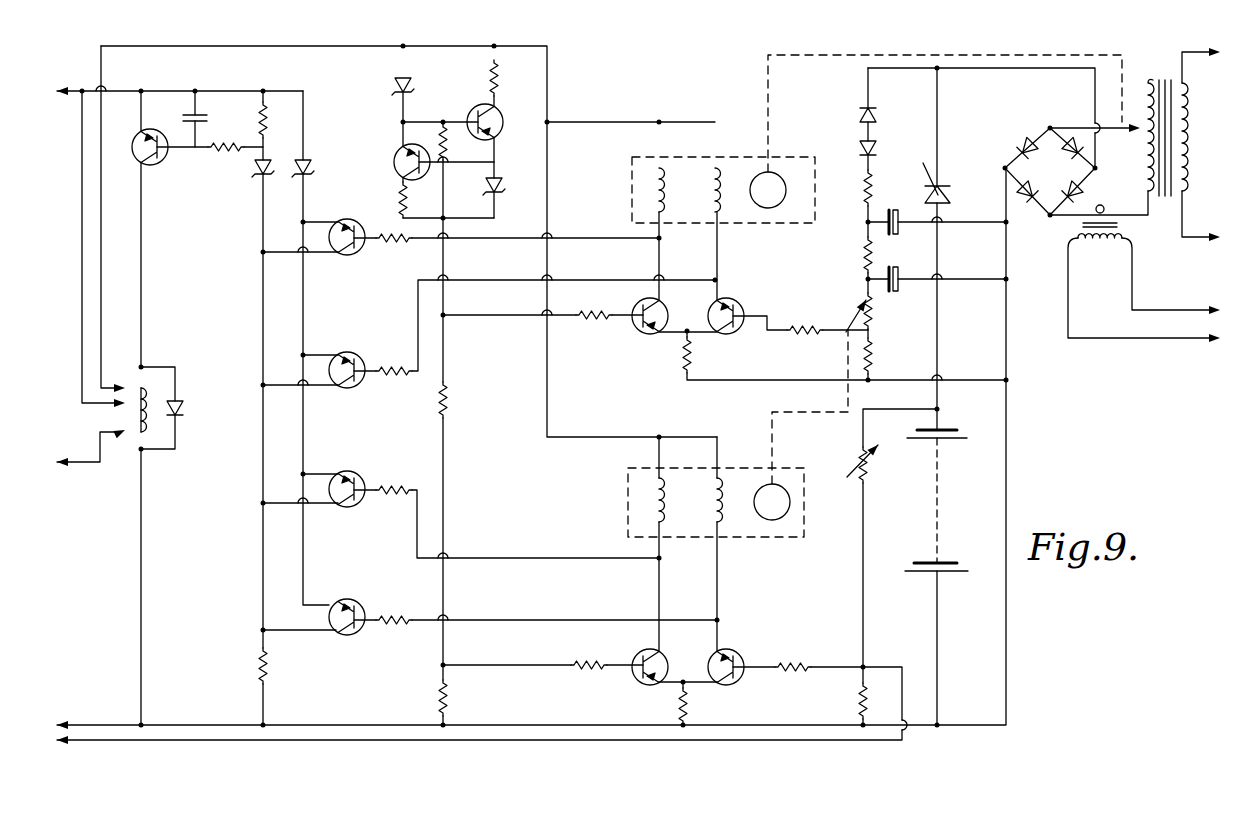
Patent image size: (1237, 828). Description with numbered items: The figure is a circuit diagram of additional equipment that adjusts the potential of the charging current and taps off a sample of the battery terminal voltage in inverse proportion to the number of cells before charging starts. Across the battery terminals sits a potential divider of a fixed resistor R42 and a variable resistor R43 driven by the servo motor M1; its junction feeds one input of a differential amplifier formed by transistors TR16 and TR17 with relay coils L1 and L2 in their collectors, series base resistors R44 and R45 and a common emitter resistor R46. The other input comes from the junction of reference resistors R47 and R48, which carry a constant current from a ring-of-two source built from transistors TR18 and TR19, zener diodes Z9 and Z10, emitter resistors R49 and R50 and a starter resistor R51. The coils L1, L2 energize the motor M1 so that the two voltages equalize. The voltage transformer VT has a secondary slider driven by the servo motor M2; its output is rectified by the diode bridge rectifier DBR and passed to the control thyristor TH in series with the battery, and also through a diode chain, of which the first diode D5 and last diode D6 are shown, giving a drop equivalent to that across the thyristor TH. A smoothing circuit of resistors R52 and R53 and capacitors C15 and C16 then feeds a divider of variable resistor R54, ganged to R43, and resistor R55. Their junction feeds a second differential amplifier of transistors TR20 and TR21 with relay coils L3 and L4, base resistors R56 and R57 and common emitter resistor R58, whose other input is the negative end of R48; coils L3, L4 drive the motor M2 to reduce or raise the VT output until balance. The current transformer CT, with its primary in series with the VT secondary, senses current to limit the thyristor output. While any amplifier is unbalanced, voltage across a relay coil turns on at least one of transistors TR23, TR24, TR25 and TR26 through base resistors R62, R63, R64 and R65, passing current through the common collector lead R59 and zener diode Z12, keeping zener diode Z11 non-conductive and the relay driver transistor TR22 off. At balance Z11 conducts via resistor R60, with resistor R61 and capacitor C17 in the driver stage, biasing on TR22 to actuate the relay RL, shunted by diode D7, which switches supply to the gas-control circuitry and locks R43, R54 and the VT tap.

The resistor R60 is at (265, 105).
The capacitor C17 is at (207, 118).
The resistor R61 is at (213, 161).
The relay driver transistor TR22 is at (156, 168).
The zener diode Z11 is at (255, 178).
The zener diode Z12 is at (313, 168).
The zener diode Z9 is at (392, 87).
The transistor TR18 is at (395, 152).
The emitter resistor R49 is at (396, 200).
The starter resistor R51 is at (446, 160).
The emitter resistor R50 is at (500, 80).
The transistor TR19 is at (503, 110).
The zener diode Z10 is at (500, 178).
The relay coil L3 is at (665, 188).
The relay coil L4 is at (713, 204).
The servo motor M2 is at (723, 190).
The first diode D5 is at (878, 115).
The last diode D6 is at (878, 150).
The resistor R52 is at (866, 199).
The capacitor C15 is at (896, 207).
The thyristor TH is at (945, 190).
The diode bridge rectifier DBR is at (1050, 171).
The voltage transformer VT is at (1177, 144).
The current transformer CT is at (1144, 273).
The resistor R53 is at (846, 255).
The capacitor C16 is at (899, 266).
The series base resistor R56 is at (593, 303).
The transistor TR20 is at (640, 342).
The transistor TR21 is at (742, 305).
The series base resistor R57 is at (802, 328).
The variable resistor R54 is at (875, 314).
The resistor R55 is at (875, 357).
The common emitter resistor R58 is at (695, 355).
The diode D7 is at (185, 408).
The relay RL is at (152, 437).
The base resistor R62 is at (398, 242).
The transistor TR23 is at (355, 256).
The base resistor R63 is at (397, 378).
The transistor TR24 is at (350, 390).
The reference resistor R48 is at (451, 400).
The base resistor R64 is at (388, 498).
The transistor TR25 is at (352, 510).
The base resistor R65 is at (392, 630).
The transistor TR26 is at (352, 640).
The common collector lead resistor R59 is at (258, 670).
The reference resistor R47 is at (451, 698).
The series base resistor R44 is at (592, 650).
The transistor TR16 is at (635, 680).
The common emitter resistor R46 is at (680, 708).
The transistor TR17 is at (730, 685).
The series base resistor R45 is at (795, 660).
The fixed resistor R42 is at (868, 700).
The variable resistor R43 is at (876, 470).
The relay coil L1 is at (665, 498).
The relay coil L2 is at (714, 512).
The servo motor M1 is at (716, 502).